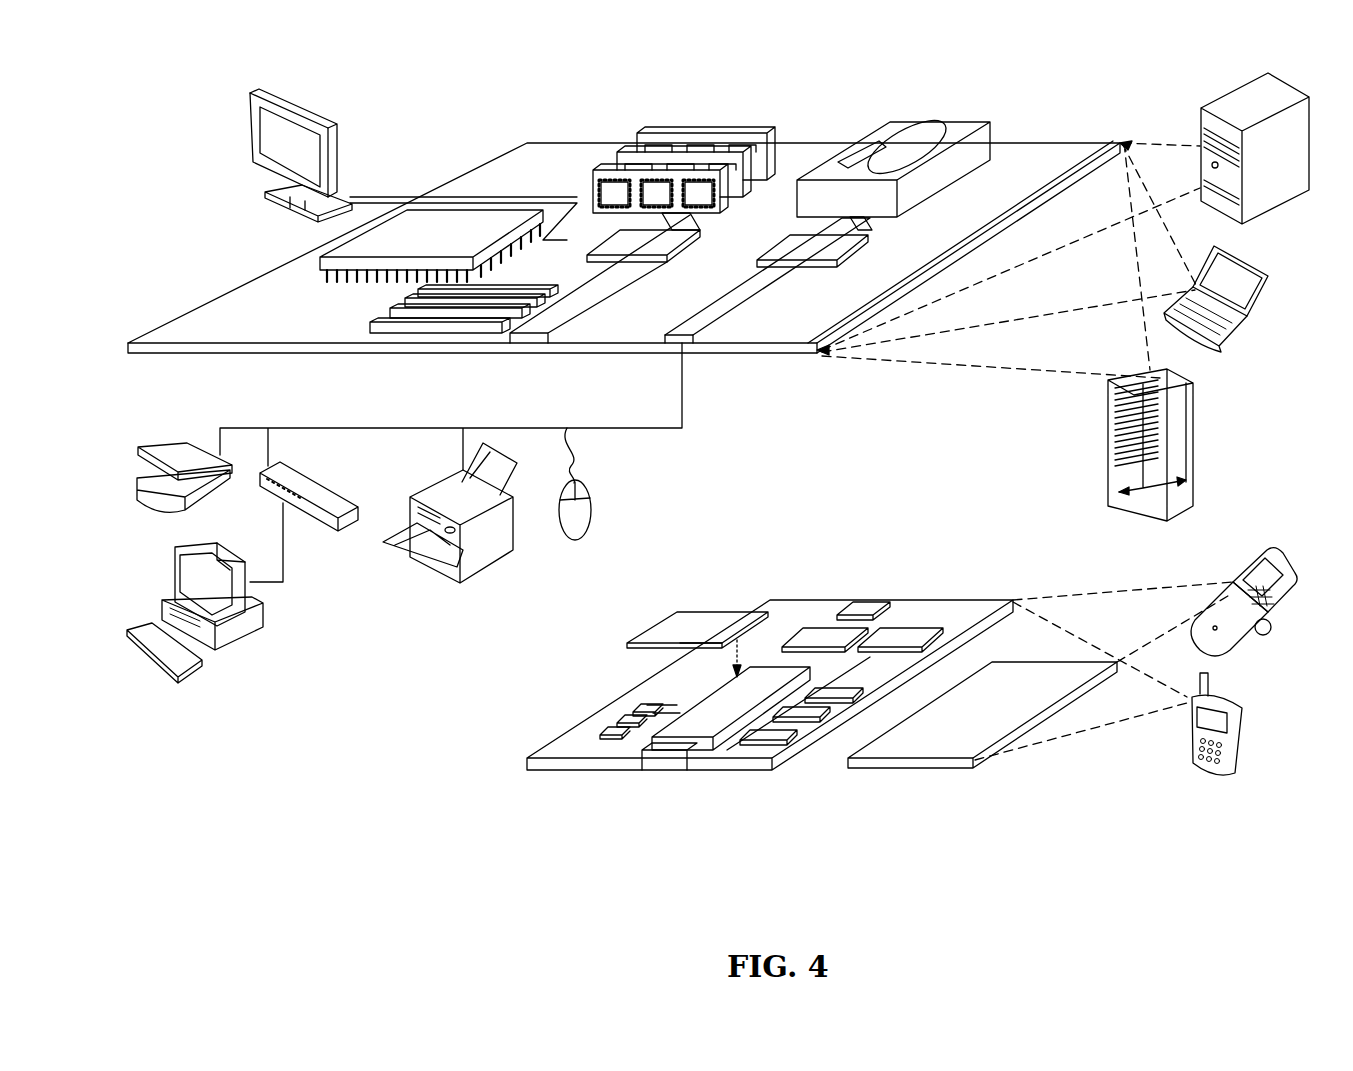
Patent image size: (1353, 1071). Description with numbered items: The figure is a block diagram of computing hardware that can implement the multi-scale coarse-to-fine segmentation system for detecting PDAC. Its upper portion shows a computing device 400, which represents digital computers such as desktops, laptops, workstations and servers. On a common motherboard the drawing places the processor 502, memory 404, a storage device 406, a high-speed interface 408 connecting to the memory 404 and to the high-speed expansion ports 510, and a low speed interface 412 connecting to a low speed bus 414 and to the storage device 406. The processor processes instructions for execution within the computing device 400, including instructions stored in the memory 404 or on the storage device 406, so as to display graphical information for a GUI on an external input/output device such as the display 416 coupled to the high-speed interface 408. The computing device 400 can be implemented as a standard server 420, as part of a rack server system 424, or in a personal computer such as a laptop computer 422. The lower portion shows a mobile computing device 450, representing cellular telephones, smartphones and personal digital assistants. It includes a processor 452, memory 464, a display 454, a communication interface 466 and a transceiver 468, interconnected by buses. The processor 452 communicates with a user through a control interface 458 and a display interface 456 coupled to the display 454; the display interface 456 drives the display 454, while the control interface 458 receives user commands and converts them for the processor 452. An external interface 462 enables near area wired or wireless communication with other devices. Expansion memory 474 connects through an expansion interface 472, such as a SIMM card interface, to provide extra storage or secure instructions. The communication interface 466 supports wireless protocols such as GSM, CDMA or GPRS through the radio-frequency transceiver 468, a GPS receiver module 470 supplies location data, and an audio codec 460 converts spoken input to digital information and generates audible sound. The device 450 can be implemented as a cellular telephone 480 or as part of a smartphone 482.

The computing device 400 is at (446, 108).
The memory 404 is at (688, 130).
The hard disk drive 406 is at (886, 120).
The high-speed interface 408 is at (620, 240).
The low speed interface 412 is at (790, 247).
The low speed bus 414 is at (728, 344).
The display 416 is at (252, 93).
The standard server 420 is at (1200, 125).
The laptop computer 422 is at (1220, 348).
The rack server system 424 is at (1108, 468).
The computing device 450 is at (504, 765).
The processor 452 is at (703, 727).
The display 454 is at (943, 747).
The display interface 456 is at (775, 740).
The control interface 458 is at (808, 716).
The audio codec 460 is at (830, 696).
The external interface 462 is at (670, 765).
The memory 464 is at (620, 720).
The communication interface 466 is at (817, 635).
The transceiver 468 is at (897, 635).
The GPS receiver module 470 is at (868, 600).
The expansion interface 472 is at (740, 633).
The expansion memory 474 is at (667, 612).
The cellular telephone 480 is at (1240, 580).
The smartphone 482 is at (1193, 730).
The processor 502 is at (320, 260).
The expansion slots 510 is at (397, 317).